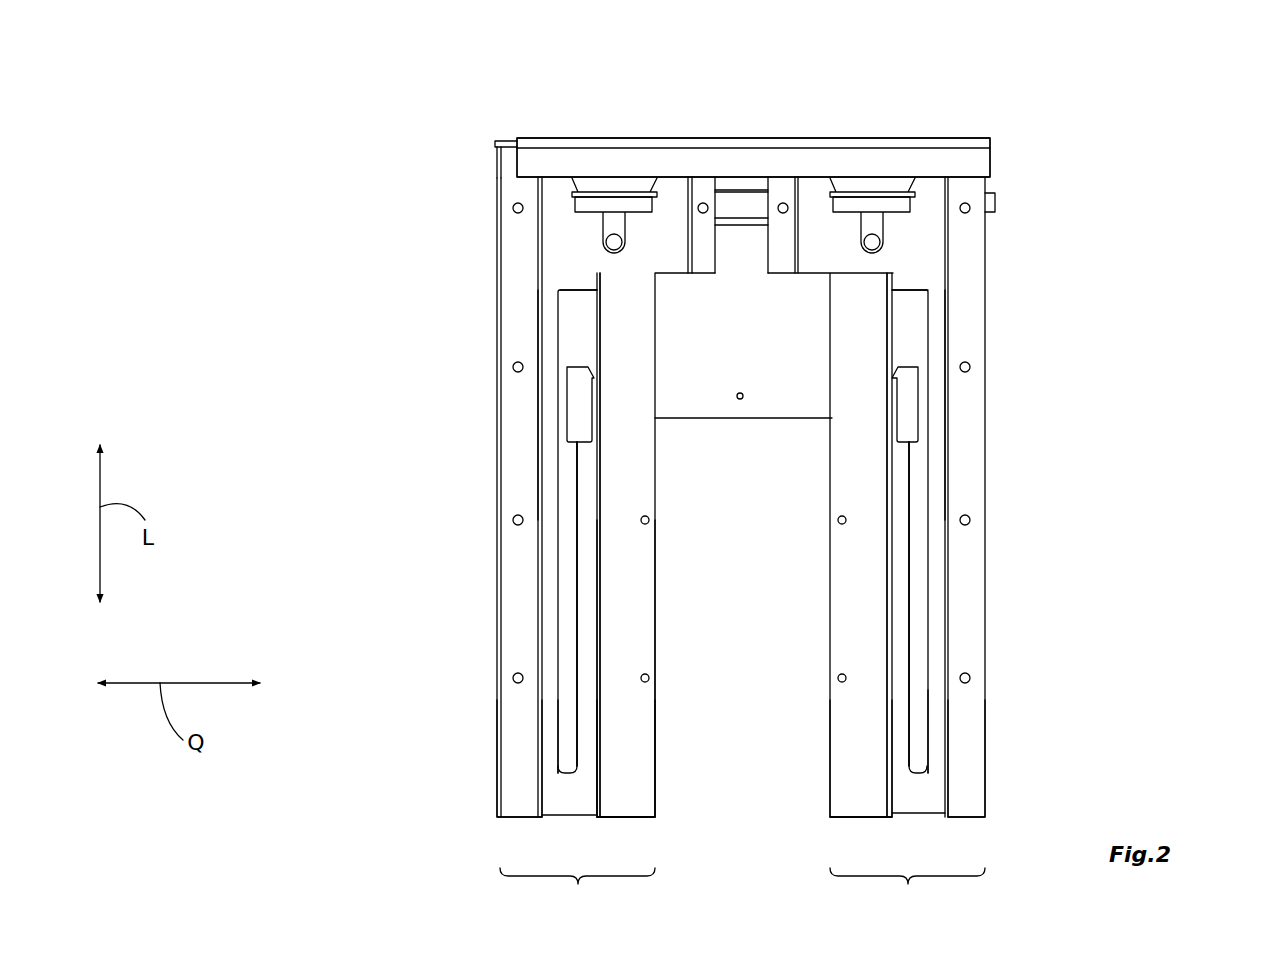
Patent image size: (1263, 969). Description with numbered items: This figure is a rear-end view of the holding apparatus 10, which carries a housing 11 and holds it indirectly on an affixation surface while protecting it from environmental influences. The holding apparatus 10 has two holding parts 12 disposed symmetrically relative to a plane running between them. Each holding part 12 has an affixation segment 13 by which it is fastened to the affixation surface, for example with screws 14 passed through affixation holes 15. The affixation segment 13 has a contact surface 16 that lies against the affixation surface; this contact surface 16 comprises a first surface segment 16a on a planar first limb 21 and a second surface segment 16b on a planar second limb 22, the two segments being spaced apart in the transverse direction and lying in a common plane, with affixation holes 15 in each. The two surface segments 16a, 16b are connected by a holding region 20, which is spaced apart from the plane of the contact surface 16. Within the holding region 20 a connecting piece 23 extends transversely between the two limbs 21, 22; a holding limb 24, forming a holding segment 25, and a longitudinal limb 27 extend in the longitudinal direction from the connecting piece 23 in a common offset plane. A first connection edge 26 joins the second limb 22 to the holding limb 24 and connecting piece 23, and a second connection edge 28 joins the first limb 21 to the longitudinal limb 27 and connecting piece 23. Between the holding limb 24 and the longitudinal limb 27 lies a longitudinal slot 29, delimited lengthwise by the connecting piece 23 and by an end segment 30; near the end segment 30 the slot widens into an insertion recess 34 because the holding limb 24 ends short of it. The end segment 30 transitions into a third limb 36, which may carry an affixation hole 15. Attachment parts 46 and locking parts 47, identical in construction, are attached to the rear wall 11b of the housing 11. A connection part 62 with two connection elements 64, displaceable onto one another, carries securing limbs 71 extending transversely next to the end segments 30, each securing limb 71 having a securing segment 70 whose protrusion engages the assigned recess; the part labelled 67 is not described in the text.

The holding apparatus 10 is at (1100, 117).
The housing 11 is at (677, 421).
The rear wall 11b is at (741, 400).
The holding part 12 is at (477, 224).
The affixation segment 13 is at (656, 826).
The screw 14 is at (649, 680).
The affixation hole 15 is at (514, 368).
The contact surface 16 is at (743, 885).
The first surface segment 16a is at (523, 799).
The second surface segment 16b is at (633, 796).
The holding region 20 is at (553, 702).
The first limb 21 is at (530, 448).
The second limb 22 is at (633, 346).
The connecting piece 23 is at (570, 800).
The holding limb 24 is at (588, 652).
The holding segment 25 is at (588, 652).
The first connection edge 26 is at (603, 607).
The longitudinal limb 27 is at (555, 498).
The second connection edge 28 is at (543, 320).
The longitudinal slot 29 is at (568, 598).
The end segment 30 is at (568, 250).
The insertion recess 34 is at (590, 330).
The third limb 36 is at (789, 190).
The attachment part 46 is at (568, 400).
The locking part 47 is at (634, 188).
The connection part 62 is at (881, 150).
The connection element 64 is at (494, 145).
The front edge 67 is at (965, 137).
The securing segment 70 is at (604, 182).
The securing limb 71 is at (506, 157).